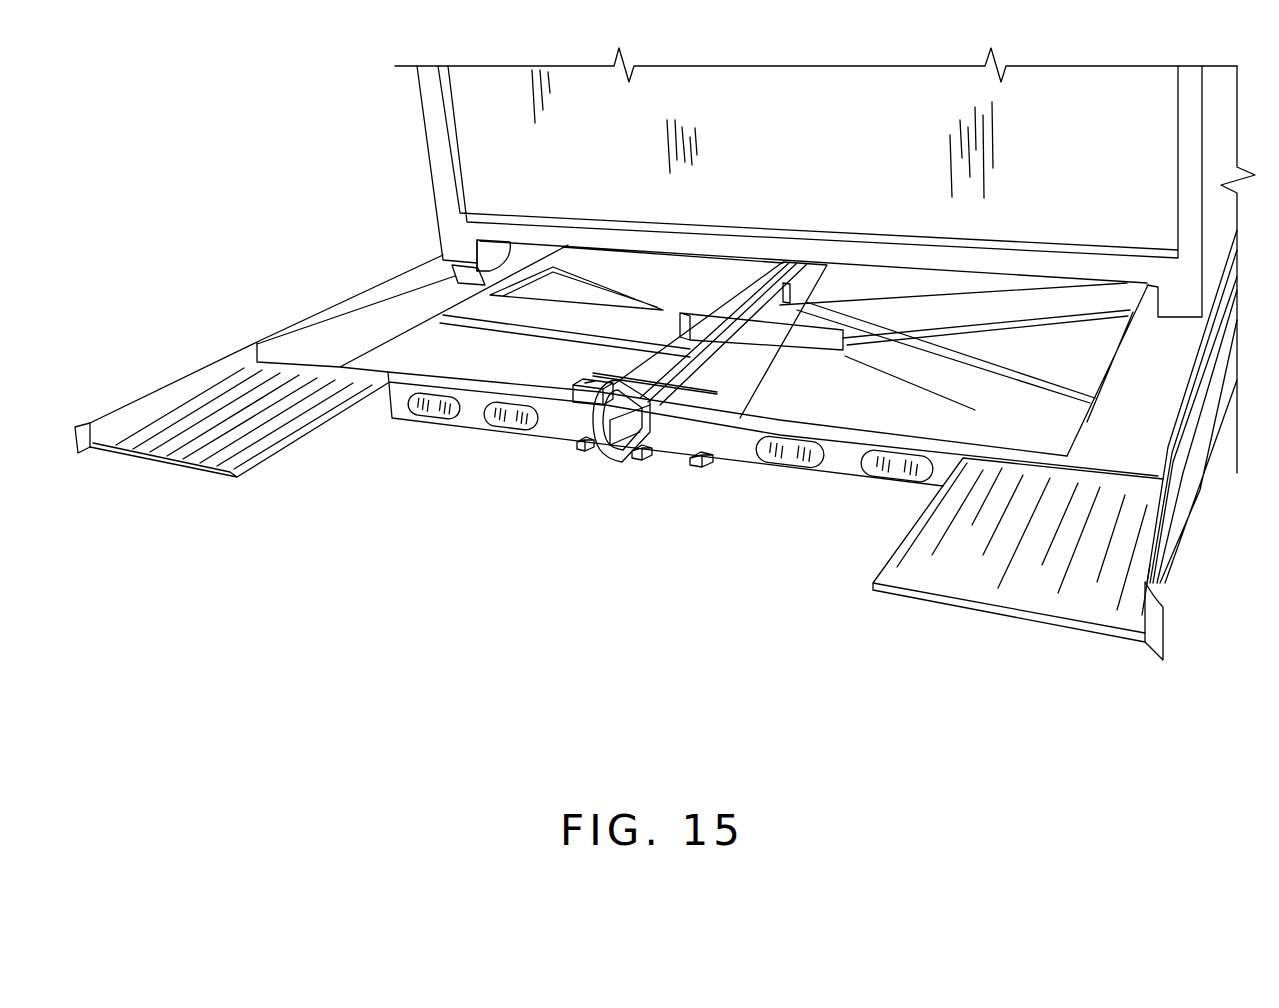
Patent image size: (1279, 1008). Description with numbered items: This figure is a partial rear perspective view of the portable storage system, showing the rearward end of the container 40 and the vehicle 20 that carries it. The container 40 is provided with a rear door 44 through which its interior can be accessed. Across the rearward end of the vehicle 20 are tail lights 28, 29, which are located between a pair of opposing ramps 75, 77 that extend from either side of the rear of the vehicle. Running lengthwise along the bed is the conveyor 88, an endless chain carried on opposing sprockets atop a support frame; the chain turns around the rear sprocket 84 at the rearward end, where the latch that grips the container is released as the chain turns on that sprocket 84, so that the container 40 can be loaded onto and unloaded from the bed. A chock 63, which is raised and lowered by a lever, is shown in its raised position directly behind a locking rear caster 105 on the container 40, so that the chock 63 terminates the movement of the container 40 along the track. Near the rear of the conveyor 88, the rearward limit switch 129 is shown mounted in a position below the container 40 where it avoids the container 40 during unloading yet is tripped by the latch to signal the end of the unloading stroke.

The vehicle 20 is at (438, 523).
The tail light 28 is at (505, 422).
The tail light 29 is at (798, 457).
The container 40 is at (437, 125).
The rear door 44 is at (818, 152).
The chock 63 is at (463, 282).
The ramp 75 is at (187, 452).
The ramp 77 is at (950, 583).
The rear sprocket 84 is at (672, 440).
The conveyor 88 is at (608, 462).
The locking rear caster 105 is at (488, 257).
The rearward limit switch 129 is at (574, 402).